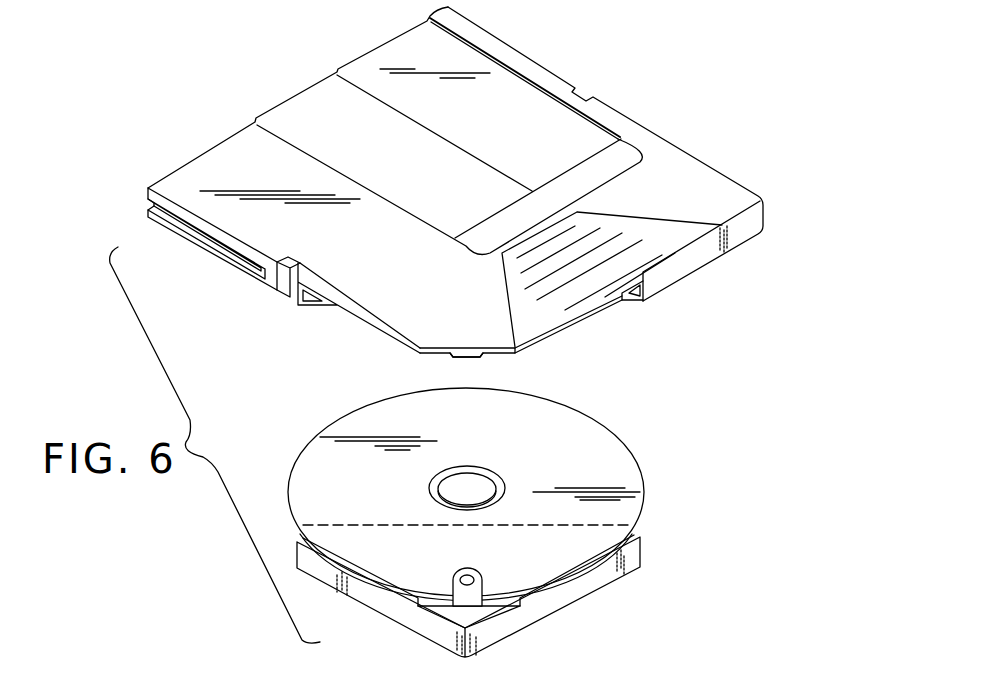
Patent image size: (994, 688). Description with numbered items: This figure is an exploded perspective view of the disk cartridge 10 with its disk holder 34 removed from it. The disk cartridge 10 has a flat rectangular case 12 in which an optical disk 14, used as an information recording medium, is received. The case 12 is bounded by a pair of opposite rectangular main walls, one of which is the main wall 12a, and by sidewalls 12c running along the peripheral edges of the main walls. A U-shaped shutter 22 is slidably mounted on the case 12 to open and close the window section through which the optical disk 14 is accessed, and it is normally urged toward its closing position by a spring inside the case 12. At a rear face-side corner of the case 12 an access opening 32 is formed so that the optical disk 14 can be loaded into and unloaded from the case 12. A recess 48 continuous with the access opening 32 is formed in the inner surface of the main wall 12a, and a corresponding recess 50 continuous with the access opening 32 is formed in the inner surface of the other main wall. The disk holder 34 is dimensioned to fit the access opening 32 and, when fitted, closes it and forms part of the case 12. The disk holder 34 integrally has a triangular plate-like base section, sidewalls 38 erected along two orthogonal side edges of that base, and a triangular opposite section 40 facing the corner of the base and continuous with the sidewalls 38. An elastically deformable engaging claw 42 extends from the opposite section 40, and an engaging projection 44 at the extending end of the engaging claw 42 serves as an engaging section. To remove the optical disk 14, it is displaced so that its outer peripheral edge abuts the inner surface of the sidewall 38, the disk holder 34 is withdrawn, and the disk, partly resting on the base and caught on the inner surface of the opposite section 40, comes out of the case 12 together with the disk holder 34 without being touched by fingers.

The disk cartridge 10 is at (551, 52).
The case 12 is at (678, 124).
The main wall 12a is at (681, 172).
The sidewalls 12c is at (226, 251).
The optical disk 14 is at (613, 462).
The shutter 22 is at (313, 105).
The access opening 32 is at (350, 322).
The disk holder 34 is at (645, 626).
The sidewalls 38 is at (372, 597).
The opposite section 40 is at (480, 617).
The engaging claw 42 is at (483, 577).
The engaging projection 44 is at (462, 575).
The recess 48 is at (467, 358).
The recess 50 is at (622, 298).